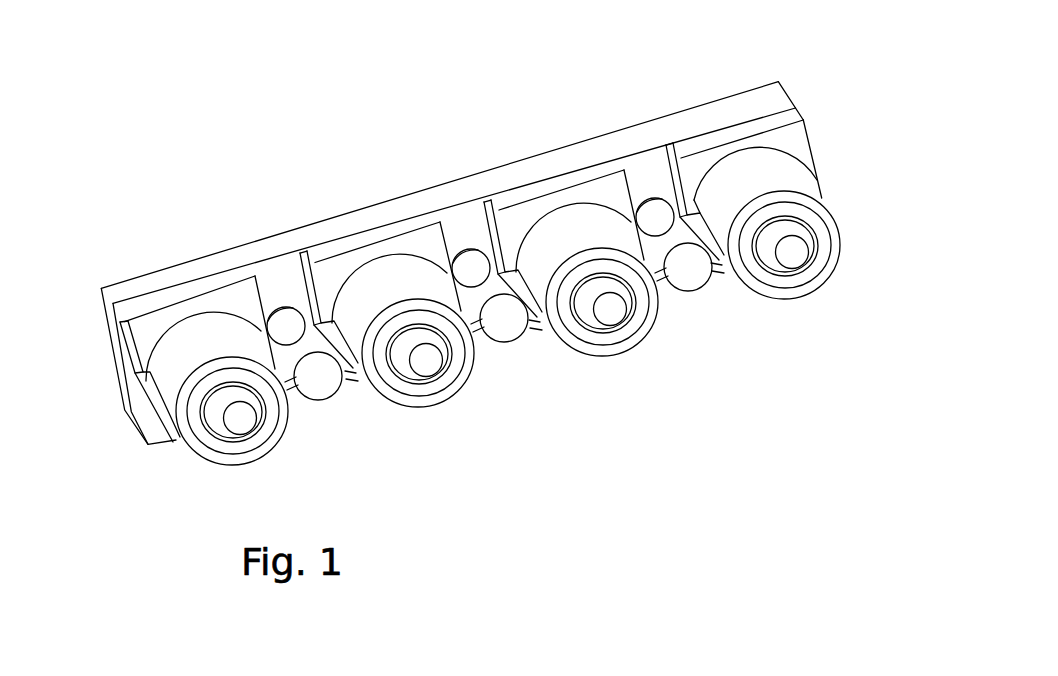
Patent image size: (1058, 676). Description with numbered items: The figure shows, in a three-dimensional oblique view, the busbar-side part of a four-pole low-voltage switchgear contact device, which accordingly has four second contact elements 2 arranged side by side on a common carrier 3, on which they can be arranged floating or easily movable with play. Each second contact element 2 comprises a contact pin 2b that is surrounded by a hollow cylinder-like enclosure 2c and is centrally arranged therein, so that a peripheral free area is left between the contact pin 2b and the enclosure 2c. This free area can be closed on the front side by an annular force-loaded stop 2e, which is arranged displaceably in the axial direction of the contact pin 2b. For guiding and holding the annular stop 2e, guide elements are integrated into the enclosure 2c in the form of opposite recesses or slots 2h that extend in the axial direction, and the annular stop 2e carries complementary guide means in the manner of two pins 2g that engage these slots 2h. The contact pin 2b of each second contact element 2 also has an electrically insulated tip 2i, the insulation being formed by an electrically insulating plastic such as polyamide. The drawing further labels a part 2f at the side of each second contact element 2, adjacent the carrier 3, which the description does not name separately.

The second contact element 2 is at (163, 320).
The contact pin 2b is at (218, 418).
The enclosure 2c is at (392, 277).
The annular stop 2e is at (232, 442).
The side arm / web 2f is at (365, 237).
The pins 2g is at (298, 393).
The recesses or slots 2h is at (292, 330).
The electrically insulated tip 2i is at (788, 243).
The carrier 3 is at (118, 287).